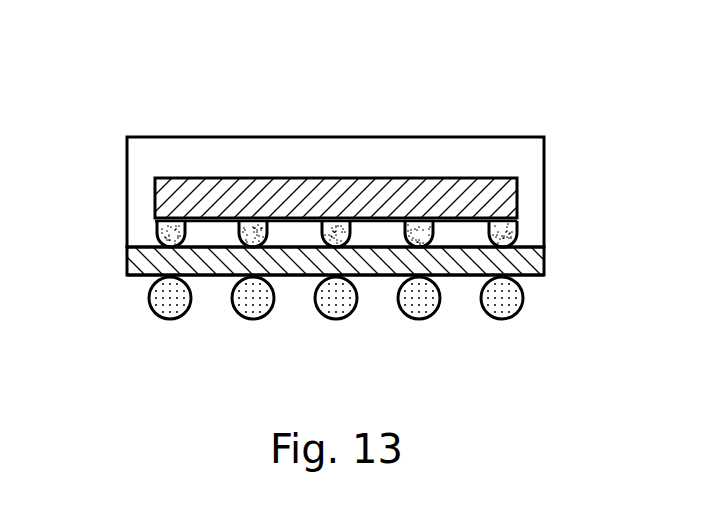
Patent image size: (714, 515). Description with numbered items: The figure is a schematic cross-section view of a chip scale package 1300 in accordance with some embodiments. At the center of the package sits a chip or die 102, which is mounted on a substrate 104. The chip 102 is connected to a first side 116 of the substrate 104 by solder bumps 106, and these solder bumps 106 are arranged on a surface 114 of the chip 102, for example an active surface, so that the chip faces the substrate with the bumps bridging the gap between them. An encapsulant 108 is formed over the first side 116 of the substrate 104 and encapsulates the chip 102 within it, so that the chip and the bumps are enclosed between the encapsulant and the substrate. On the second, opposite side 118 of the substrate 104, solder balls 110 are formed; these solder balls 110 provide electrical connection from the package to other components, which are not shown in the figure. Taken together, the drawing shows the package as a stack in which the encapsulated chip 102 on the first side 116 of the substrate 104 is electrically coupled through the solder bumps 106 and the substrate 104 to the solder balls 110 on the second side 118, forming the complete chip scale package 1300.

The chip scale package 1300 is at (503, 82).
The encapsulant 108 is at (538, 152).
The chip 102 is at (516, 184).
The solder bumps 106 is at (517, 228).
The substrate 104 is at (535, 259).
The solder balls 110 is at (522, 293).
The first side 116 is at (228, 245).
The surface 114 is at (205, 222).
The second side 118 is at (142, 275).